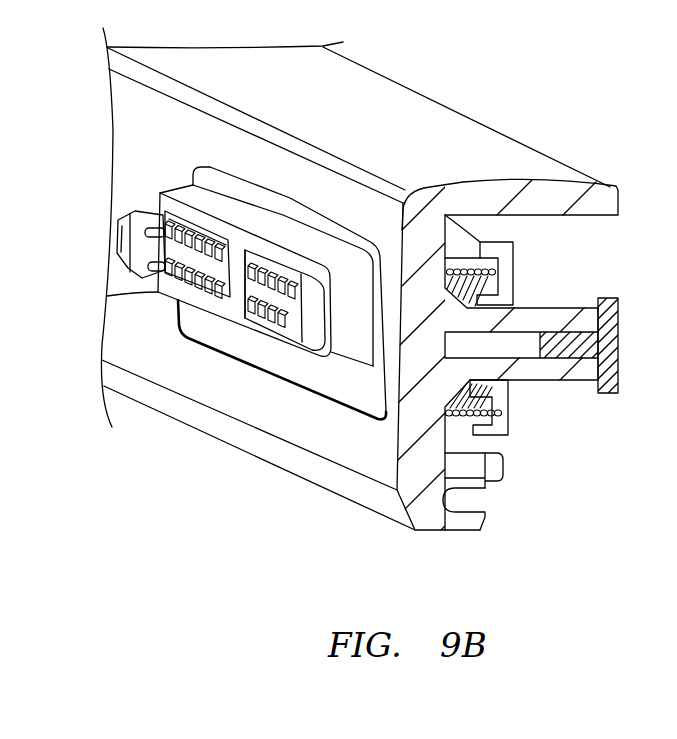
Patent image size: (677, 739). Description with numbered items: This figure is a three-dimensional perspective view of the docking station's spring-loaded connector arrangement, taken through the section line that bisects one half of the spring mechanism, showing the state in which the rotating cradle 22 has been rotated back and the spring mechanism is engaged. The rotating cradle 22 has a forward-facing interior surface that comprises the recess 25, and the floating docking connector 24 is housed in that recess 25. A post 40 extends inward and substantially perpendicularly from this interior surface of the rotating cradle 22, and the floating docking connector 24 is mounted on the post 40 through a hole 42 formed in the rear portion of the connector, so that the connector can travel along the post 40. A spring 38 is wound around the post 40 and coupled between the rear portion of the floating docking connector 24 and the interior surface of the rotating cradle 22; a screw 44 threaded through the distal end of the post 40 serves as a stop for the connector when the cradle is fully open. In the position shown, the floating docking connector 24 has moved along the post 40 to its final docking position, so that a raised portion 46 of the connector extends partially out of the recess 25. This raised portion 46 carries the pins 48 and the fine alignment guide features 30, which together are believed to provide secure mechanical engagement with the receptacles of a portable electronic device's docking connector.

The rotating cradle 22 is at (403, 510).
The floating docking connector 24 is at (232, 318).
The recess 25 is at (270, 376).
The fine alignment guide features 30 is at (120, 217).
The spring 38 is at (497, 426).
The post 40 is at (531, 369).
The hole 42 is at (514, 304).
The screw 44 is at (609, 341).
The raised portion 46 is at (289, 200).
The pins 48 is at (172, 284).